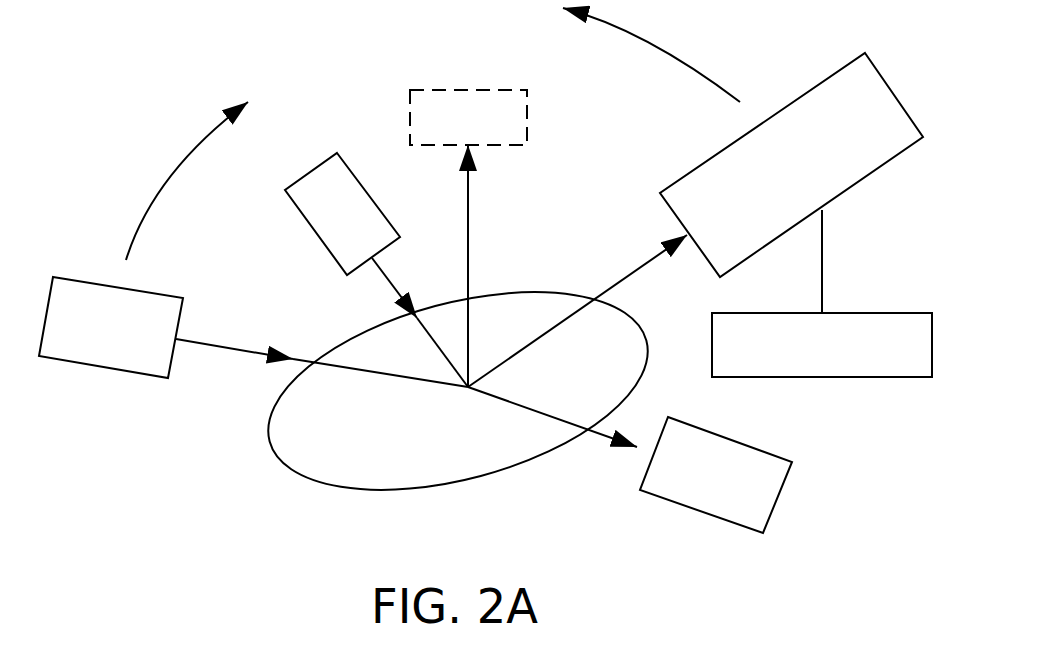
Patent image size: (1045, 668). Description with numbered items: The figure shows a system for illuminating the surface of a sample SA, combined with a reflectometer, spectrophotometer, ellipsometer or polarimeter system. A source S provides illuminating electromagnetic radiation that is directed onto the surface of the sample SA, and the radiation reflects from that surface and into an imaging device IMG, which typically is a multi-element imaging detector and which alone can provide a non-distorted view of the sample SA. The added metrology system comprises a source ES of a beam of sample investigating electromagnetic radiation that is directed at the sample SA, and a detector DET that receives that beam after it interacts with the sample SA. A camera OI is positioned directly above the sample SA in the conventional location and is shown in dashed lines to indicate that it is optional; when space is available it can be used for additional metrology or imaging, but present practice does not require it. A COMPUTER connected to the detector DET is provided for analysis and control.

The sample SA is at (393, 437).
The source of a beam of sample investigating electromagnetic radiation ES is at (90, 341).
The source of illuminating electromagnetic radiation S is at (354, 229).
The camera OI is at (453, 127).
The detector DET is at (762, 174).
The computer COMPUTER is at (905, 357).
The imaging device IMG is at (692, 487).